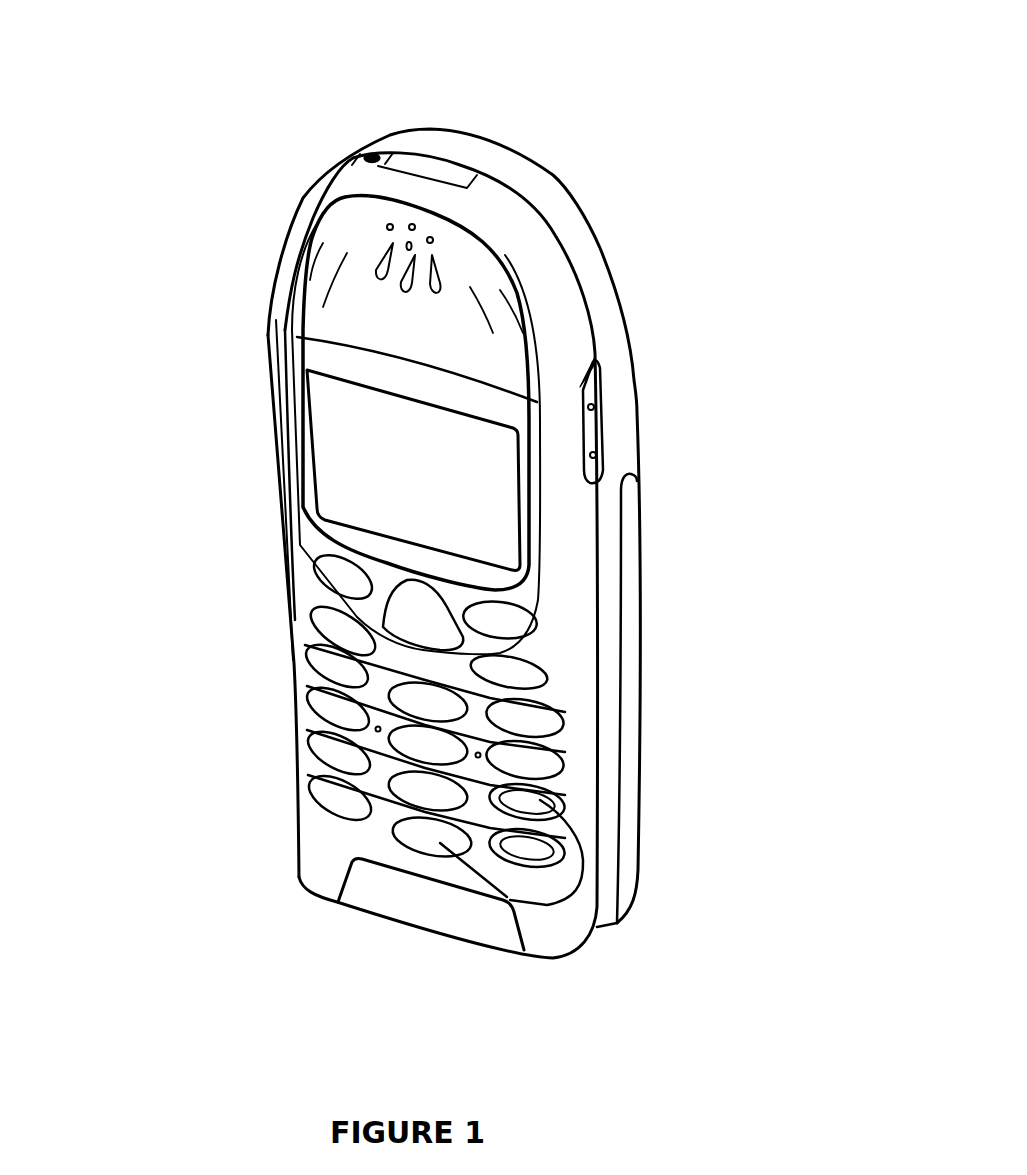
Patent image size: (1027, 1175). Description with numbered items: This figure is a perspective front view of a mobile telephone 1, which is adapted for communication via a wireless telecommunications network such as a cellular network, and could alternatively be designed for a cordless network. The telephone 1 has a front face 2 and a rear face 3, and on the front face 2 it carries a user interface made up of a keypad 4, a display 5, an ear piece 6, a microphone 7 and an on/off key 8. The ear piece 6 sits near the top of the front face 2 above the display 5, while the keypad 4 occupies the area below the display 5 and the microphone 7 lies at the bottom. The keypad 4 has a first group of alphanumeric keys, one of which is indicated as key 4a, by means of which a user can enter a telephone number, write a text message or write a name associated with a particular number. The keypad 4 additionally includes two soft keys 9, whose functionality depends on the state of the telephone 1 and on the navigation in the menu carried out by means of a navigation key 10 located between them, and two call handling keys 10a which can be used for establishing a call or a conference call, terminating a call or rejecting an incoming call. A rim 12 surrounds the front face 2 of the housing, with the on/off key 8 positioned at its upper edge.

The mobile telephone 1 is at (122, 97).
The front face 2 is at (580, 790).
The rear face 3 is at (637, 413).
The keypad 4 is at (300, 738).
The key 4a is at (527, 857).
The display 5 is at (343, 448).
The ear piece 6 is at (398, 249).
The microphone 7 is at (437, 925).
The on/off key 8 is at (375, 155).
The soft keys 9 is at (323, 569).
The navigation key 10 is at (427, 623).
The call handling keys 10a is at (325, 613).
The housing rim 12 is at (587, 253).